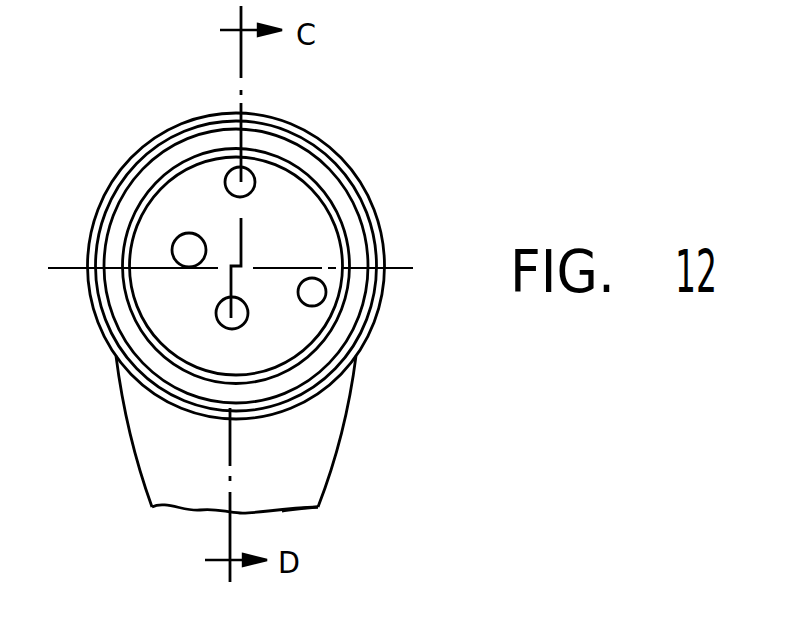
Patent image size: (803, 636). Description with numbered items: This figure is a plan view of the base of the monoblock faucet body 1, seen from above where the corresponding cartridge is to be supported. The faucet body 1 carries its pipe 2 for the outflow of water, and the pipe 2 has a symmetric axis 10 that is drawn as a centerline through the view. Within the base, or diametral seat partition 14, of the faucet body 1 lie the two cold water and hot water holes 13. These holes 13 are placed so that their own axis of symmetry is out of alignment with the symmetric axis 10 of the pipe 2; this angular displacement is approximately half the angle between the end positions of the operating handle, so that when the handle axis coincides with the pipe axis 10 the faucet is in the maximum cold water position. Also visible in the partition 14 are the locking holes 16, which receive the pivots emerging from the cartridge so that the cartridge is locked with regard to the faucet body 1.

The faucet body 1 is at (373, 237).
The pipe 2 is at (170, 494).
The symmetric axis of the pipe 10 is at (282, 488).
The cold water and hot water holes 13 is at (173, 242).
The seat partition 14 is at (316, 213).
The locking holes 16 is at (250, 172).